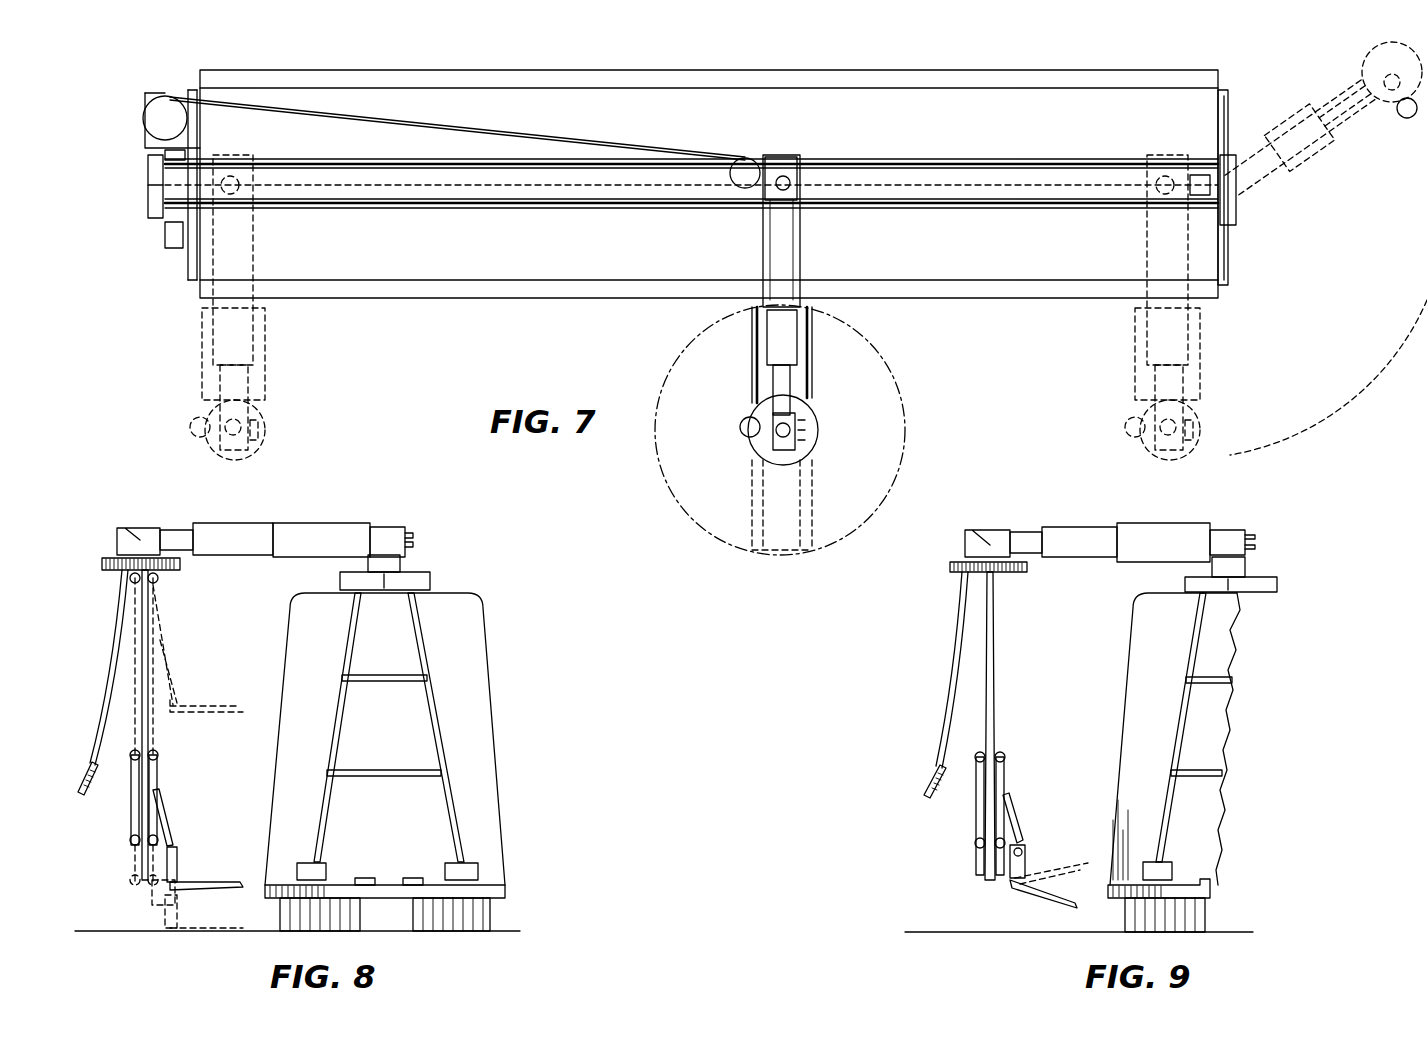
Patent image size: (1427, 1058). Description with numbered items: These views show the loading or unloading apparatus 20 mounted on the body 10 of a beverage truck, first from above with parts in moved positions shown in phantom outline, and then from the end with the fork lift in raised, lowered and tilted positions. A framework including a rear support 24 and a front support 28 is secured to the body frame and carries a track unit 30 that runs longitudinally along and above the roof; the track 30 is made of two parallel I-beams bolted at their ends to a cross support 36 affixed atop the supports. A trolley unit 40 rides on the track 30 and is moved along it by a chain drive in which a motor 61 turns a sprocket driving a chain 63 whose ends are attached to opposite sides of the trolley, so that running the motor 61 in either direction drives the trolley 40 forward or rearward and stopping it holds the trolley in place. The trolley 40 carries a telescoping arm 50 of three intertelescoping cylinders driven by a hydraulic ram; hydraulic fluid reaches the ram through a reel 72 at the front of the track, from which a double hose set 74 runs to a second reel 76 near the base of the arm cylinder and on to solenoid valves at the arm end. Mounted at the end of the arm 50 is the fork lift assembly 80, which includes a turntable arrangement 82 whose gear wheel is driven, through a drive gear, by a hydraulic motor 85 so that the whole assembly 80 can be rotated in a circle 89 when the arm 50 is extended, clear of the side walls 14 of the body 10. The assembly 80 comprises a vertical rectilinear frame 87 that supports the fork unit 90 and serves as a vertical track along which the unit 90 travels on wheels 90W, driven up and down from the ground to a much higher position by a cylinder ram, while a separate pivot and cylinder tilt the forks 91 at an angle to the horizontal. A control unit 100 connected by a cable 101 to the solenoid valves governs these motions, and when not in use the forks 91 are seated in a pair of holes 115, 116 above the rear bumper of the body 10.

In FIG. 7, the body 10 is at (485, 70).
In FIG. 8, the body 10 is at (483, 778).
In FIG. 7, the side walls 14 is at (515, 300).
In FIG. 7, the loading or unloading apparatus 20 is at (691, 215).
In FIG. 8, the loading or unloading apparatus 20 is at (424, 536).
In FIG. 9, the loading or unloading apparatus 20 is at (1181, 714).
In FIG. 8, the rear support 24 is at (445, 755).
In FIG. 8, the front support 28 is at (326, 752).
In FIG. 9, the front support 28 is at (1198, 662).
In FIG. 7, the track unit 30 is at (387, 200).
In FIG. 8, the cross support 36 is at (428, 578).
In FIG. 9, the cross support 36 is at (1258, 578).
In FIG. 7, the trolley unit 40 is at (800, 177).
In FIG. 7, the telescoping arm 50 is at (782, 270).
In FIG. 8, the telescoping arm 50 is at (260, 537).
In FIG. 9, the telescoping arm 50 is at (1097, 537).
In FIG. 7, the motor 61 is at (173, 245).
In FIG. 7, the chain 63 is at (413, 182).
In FIG. 7, the reel 72 is at (165, 100).
In FIG. 7, the double hose set 74 is at (500, 118).
In FIG. 7, the second reel 76 is at (745, 163).
In FIG. 7, the fork lift assembly 80 is at (265, 378).
In FIG. 8, the fork lift assembly 80 is at (175, 700).
In FIG. 9, the fork lift assembly 80 is at (1010, 795).
In FIG. 7, the turntable arrangement 82 is at (805, 448).
In FIG. 7, the hydraulic motor 85 is at (740, 427).
In FIG. 8, the vertical rectilinear frame 87 is at (142, 700).
In FIG. 9, the vertical rectilinear frame 87 is at (995, 668).
In FIG. 7, the circle 89 is at (905, 418).
In FIG. 8, the fork unit 90 is at (176, 875).
In FIG. 9, the fork unit 90 is at (1026, 858).
In FIG. 8, the wheels 90W is at (160, 680).
In FIG. 8, the forks 91 is at (225, 718).
In FIG. 9, the forks 91 is at (1075, 866).
In FIG. 8, the control unit 100 is at (78, 800).
In FIG. 9, the control unit 100 is at (924, 803).
In FIG. 8, the cable 101 is at (112, 680).
In FIG. 9, the cable 101 is at (953, 700).
In FIG. 8, the hole 115 is at (372, 877).
In FIG. 8, the hole 116 is at (405, 877).